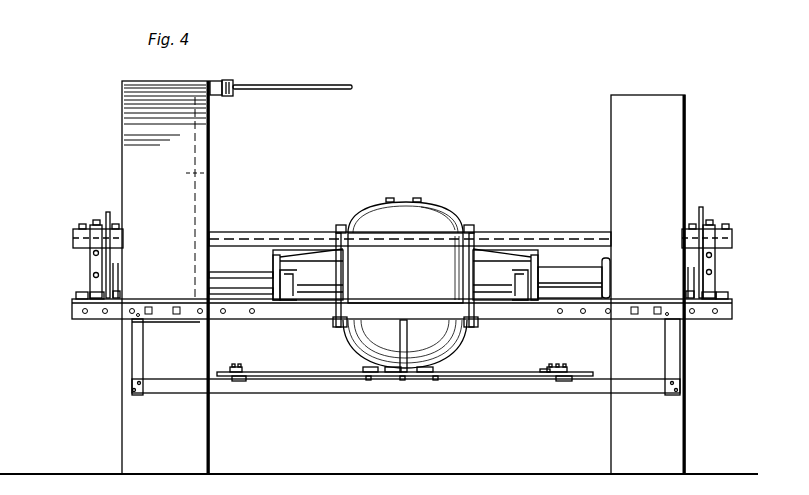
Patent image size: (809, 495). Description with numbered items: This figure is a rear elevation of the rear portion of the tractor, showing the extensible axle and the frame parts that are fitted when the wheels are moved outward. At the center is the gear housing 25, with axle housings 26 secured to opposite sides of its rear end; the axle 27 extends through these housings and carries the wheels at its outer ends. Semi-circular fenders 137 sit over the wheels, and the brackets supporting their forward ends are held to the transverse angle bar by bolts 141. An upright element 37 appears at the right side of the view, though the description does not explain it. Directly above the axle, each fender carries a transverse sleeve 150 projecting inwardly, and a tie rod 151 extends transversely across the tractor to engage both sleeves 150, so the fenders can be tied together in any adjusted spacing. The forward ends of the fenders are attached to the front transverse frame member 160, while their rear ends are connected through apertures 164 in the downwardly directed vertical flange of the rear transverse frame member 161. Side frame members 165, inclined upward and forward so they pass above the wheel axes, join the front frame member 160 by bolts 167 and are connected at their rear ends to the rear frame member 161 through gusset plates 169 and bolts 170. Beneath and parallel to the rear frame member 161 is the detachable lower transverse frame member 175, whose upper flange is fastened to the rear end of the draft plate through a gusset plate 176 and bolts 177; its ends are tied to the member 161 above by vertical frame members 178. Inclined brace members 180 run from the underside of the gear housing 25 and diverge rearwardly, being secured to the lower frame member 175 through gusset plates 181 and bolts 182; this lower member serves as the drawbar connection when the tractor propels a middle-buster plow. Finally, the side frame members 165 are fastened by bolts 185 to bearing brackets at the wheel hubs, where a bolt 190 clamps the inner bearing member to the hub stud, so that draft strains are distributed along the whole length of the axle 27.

The central gear housing 25 is at (413, 247).
The axle housing 26 is at (307, 257).
The axle 27 is at (409, 276).
The right post 37 is at (625, 151).
The fender 137 is at (188, 153).
The bolt 141 is at (342, 227).
The transverse sleeve 150 is at (222, 97).
The tie rod 151 is at (326, 90).
The transverse frame member 160 is at (563, 238).
The rear transverse frame member 161 is at (553, 306).
The aperture 164 is at (143, 321).
The side frame member 165 is at (90, 262).
The bolt 167 is at (112, 220).
The gusset plate 169 is at (75, 300).
The bolt 170 is at (90, 299).
The lower transverse frame member 175 is at (463, 392).
The gusset plate 176 is at (364, 370).
The bolt 177 is at (376, 385).
The vertical frame member 178 is at (138, 353).
The inclined brace member 180 is at (311, 371).
The gusset plate 181 is at (215, 373).
The bolt 182 is at (247, 383).
The bolt 185 is at (92, 252).
The bolt 190 is at (521, 370).